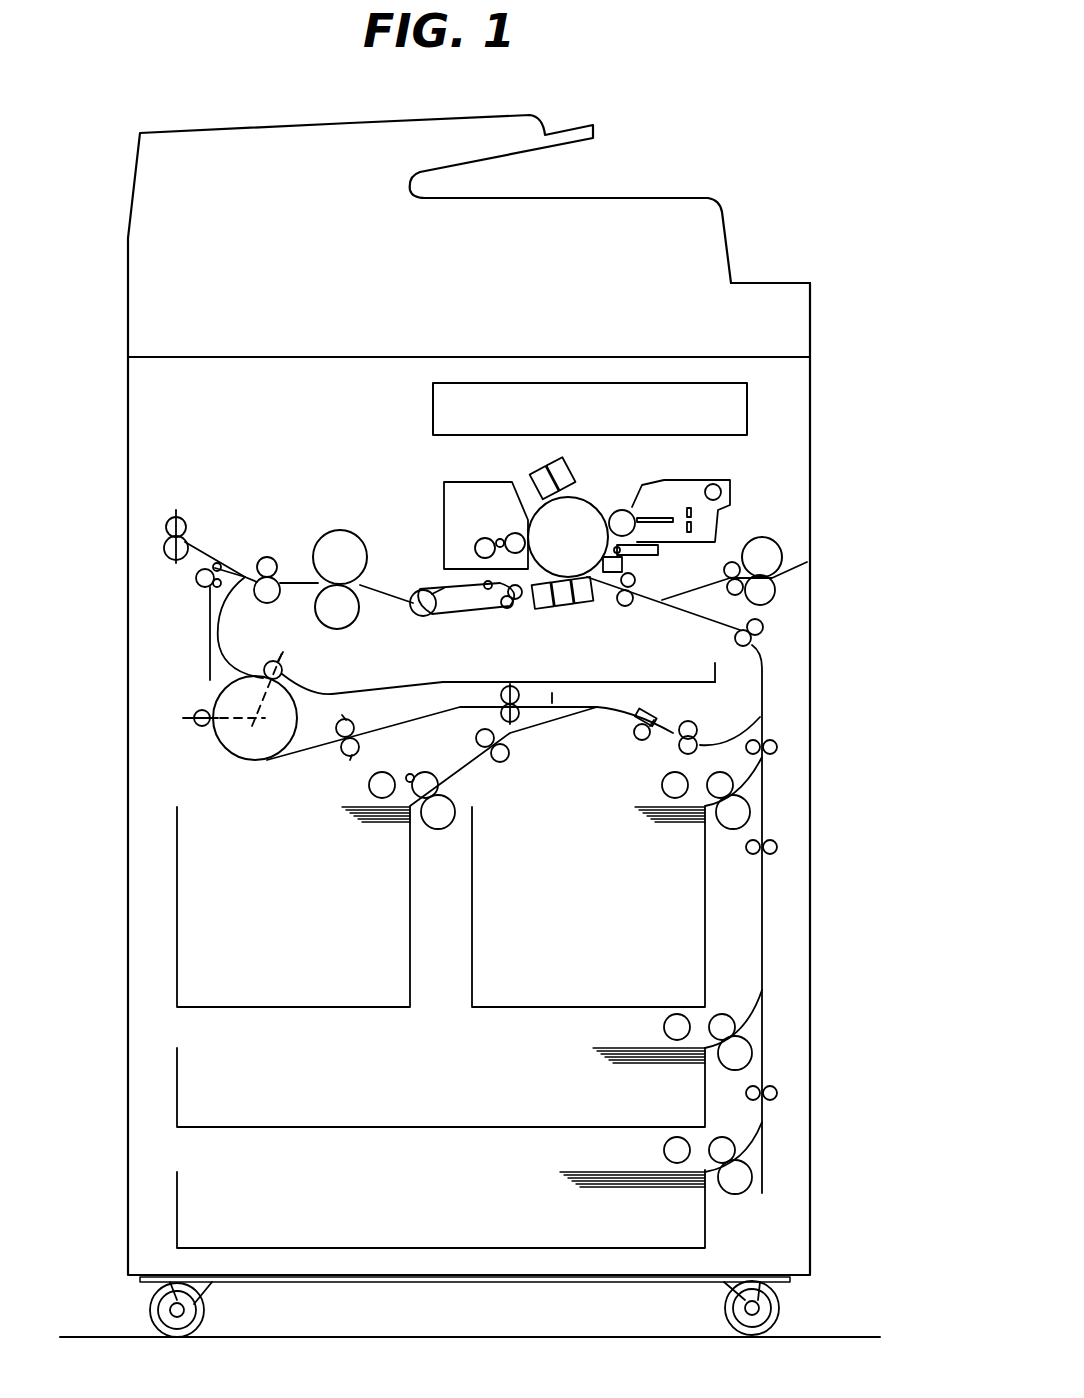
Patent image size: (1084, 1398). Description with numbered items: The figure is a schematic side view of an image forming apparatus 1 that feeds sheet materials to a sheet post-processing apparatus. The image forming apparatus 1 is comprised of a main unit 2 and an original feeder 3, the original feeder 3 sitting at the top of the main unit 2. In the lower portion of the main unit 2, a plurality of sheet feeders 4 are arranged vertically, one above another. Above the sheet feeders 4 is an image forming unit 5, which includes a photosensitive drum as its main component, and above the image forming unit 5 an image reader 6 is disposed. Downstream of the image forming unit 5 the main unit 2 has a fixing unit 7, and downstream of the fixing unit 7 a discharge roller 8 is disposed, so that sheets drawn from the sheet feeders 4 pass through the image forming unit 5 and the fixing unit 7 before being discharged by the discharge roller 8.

The image forming apparatus 1 is at (848, 614).
The main unit 2 is at (820, 668).
The original feeder 3 is at (772, 283).
The sheet feeder 4 is at (177, 895).
The image forming unit 5 is at (600, 500).
The image reader 6 is at (747, 400).
The fixing unit 7 is at (345, 530).
The discharge roller 8 is at (176, 517).